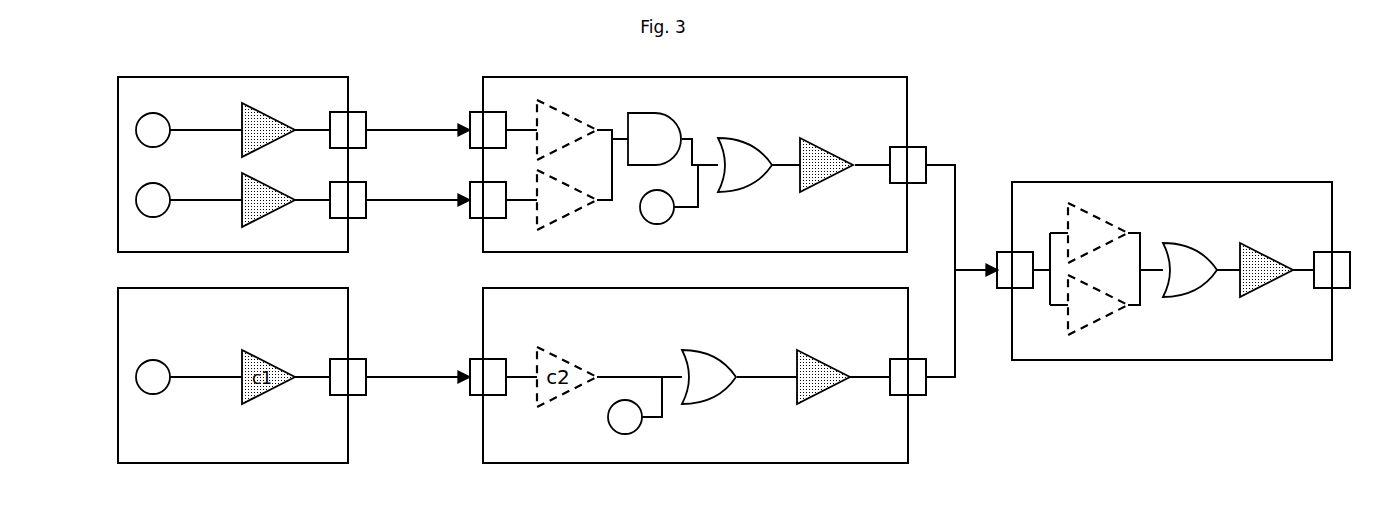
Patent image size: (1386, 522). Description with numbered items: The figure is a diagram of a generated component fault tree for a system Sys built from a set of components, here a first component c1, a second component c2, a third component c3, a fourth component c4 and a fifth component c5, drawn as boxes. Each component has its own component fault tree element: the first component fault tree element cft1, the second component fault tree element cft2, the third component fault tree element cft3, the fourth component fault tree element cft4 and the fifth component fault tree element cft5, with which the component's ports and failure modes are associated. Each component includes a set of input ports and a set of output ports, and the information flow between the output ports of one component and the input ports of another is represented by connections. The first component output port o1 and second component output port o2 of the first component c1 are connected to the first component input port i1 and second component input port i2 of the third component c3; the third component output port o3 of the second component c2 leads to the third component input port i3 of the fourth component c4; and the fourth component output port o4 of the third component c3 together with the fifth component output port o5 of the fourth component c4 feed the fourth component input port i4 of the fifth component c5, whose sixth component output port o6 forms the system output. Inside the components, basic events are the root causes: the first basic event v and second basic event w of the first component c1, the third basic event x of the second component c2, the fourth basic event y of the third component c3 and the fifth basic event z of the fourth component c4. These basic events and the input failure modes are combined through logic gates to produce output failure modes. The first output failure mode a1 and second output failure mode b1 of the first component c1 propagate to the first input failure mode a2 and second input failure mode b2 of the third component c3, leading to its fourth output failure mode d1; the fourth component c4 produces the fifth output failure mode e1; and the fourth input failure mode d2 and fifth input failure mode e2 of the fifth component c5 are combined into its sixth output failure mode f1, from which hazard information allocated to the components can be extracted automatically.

The first component c1 is at (233, 164).
The second component c2 is at (233, 375).
The third component c3 is at (695, 164).
The fourth component c4 is at (695, 375).
The fifth component c5 is at (1172, 271).
The first component fault tree element cft1 is at (310, 234).
The second component fault tree element cft2 is at (310, 446).
The third component fault tree element cft3 is at (875, 234).
The fourth component fault tree element cft4 is at (877, 446).
The fifth component fault tree element cft5 is at (1287, 334).
The first basic event v is at (153, 130).
The second basic event w is at (153, 200).
The third basic event x is at (153, 377).
The fourth basic event y is at (657, 207).
The fifth basic event z is at (625, 417).
The first output failure mode a1 is at (268, 130).
The second output failure mode b1 is at (268, 200).
The fourth output failure mode d1 is at (826, 165).
The fifth output failure mode e1 is at (823, 377).
The sixth output failure mode f1 is at (1266, 270).
The first input failure mode a2 is at (567, 130).
The second input failure mode b2 is at (567, 200).
The fourth input failure mode d2 is at (1098, 233).
The fifth input failure mode e2 is at (1098, 305).
The first component output port o1 is at (348, 130).
The second component output port o2 is at (348, 200).
The third component output port o3 is at (348, 377).
The fourth component output port o4 is at (908, 165).
The fifth component output port o5 is at (908, 377).
The sixth component output port o6 is at (1332, 270).
The first component input port i1 is at (488, 130).
The second component input port i2 is at (488, 200).
The third component input port i3 is at (488, 377).
The fourth component input port i4 is at (1015, 270).